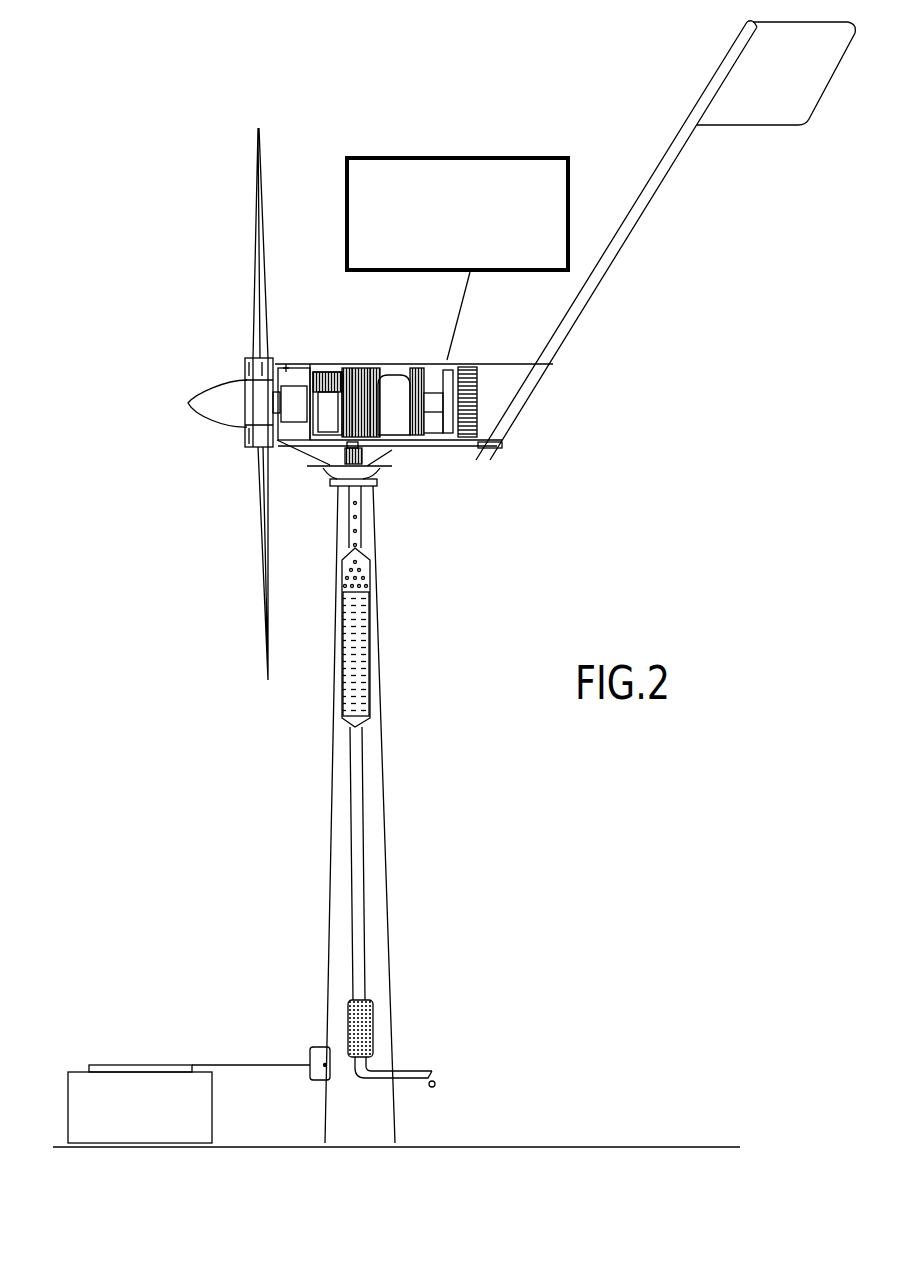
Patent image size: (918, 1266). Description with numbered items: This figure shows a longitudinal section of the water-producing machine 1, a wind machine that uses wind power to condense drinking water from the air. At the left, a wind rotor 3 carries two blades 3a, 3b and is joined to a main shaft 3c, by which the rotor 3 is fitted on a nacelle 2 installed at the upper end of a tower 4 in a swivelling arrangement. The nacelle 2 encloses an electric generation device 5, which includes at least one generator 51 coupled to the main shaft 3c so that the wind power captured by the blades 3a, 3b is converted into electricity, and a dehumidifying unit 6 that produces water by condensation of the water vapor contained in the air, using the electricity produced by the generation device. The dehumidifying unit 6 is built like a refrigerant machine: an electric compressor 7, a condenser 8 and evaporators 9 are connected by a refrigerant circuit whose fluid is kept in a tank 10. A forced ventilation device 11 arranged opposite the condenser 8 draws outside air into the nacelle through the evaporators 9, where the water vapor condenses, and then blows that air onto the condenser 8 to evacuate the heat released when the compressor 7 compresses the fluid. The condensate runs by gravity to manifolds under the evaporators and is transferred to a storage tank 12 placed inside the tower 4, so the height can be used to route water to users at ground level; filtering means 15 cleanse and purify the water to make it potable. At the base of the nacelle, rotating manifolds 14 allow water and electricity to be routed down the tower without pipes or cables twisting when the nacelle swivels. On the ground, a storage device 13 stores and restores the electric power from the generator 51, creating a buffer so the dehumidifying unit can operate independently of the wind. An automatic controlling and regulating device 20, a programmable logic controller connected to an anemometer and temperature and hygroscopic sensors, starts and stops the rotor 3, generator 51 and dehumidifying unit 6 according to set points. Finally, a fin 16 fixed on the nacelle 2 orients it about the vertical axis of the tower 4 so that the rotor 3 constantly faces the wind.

The water-producing machine 1 is at (196, 343).
The nacelle 2 is at (516, 366).
The wind rotor 3 is at (207, 398).
The blade 3a is at (262, 265).
The blade 3b is at (262, 620).
The main shaft 3c is at (247, 403).
The tower 4 is at (378, 900).
The electric generation device 5 is at (291, 366).
The dehumidifying unit 6 is at (420, 360).
The electric compressor 7 is at (393, 398).
The condenser 8 is at (477, 387).
The evaporator 9 is at (358, 373).
The tank 10 is at (330, 408).
The forced ventilation device 11 is at (440, 447).
The storage tank 12 is at (367, 677).
The storage device 13 is at (110, 1086).
The rotating manifold 14 is at (372, 452).
The filtering means 15 is at (352, 1027).
The fin 16 is at (748, 108).
The controlling and regulating device 20 is at (457, 259).
The generator 51 is at (288, 410).